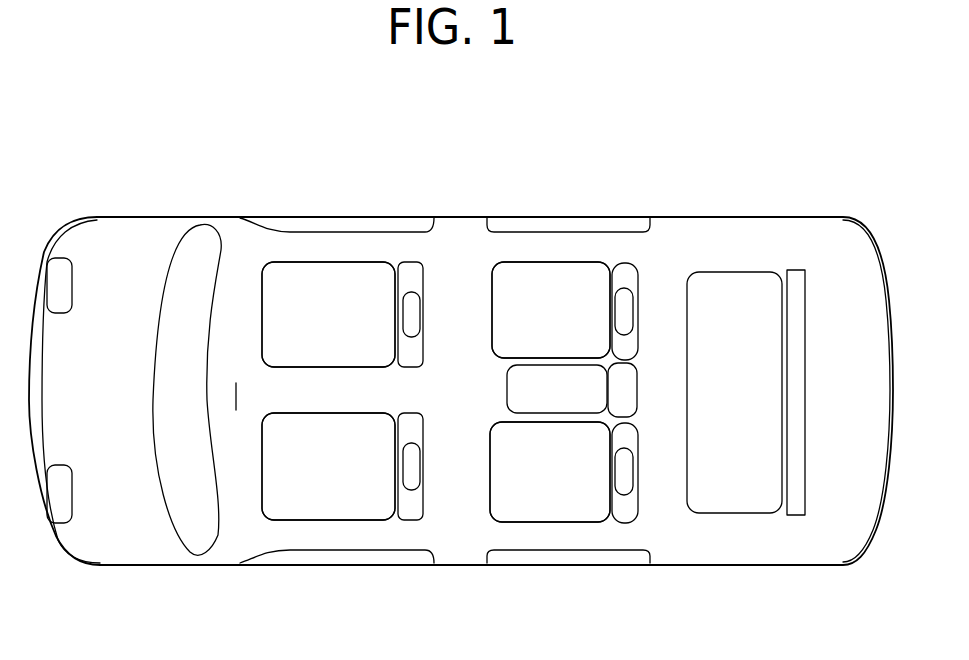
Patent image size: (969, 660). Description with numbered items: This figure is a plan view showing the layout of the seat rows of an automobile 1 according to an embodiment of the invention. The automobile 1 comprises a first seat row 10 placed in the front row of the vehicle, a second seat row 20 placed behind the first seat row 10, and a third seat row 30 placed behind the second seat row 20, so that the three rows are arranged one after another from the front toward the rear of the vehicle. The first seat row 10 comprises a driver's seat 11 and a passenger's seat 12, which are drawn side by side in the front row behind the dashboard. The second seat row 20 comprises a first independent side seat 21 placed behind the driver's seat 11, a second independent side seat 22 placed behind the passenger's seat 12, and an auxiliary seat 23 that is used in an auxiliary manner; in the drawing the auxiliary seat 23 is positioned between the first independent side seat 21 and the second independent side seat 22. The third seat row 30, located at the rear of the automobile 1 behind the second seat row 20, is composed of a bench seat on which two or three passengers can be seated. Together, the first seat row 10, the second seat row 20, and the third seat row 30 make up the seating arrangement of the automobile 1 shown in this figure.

The automobile 1 is at (147, 251).
The first seat row 10 is at (357, 249).
The driver's seat 11 is at (282, 287).
The passenger's seat 12 is at (333, 503).
The second seat row 20 is at (567, 249).
The first independent side seat 21 is at (510, 287).
The second independent side seat 22 is at (550, 502).
The auxiliary seat 23 is at (525, 396).
The third seat row 30 is at (732, 297).